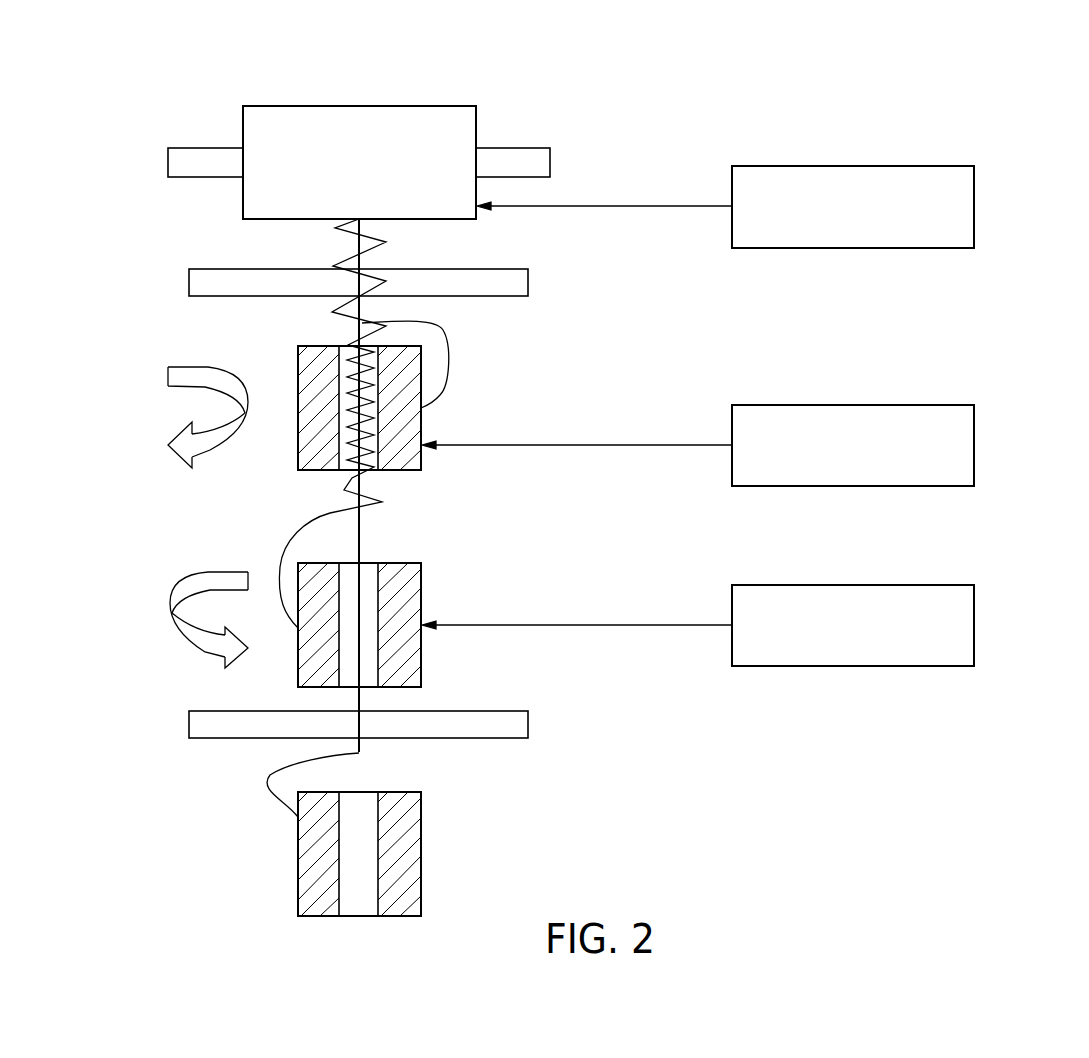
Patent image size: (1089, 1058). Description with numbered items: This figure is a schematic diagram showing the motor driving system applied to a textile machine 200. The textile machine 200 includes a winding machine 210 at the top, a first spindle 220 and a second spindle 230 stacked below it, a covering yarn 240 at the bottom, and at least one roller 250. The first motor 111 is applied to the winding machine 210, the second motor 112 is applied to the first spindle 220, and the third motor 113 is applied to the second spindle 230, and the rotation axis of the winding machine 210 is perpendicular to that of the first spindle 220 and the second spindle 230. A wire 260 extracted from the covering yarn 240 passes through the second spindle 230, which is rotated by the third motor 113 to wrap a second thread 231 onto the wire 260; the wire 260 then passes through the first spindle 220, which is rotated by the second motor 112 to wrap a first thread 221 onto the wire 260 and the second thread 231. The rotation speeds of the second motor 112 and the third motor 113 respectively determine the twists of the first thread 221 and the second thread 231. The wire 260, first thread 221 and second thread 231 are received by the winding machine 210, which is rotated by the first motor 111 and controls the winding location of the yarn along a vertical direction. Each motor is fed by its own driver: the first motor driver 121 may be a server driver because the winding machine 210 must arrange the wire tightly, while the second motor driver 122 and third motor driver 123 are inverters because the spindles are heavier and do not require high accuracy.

The textile machine 200 is at (136, 116).
The first motor 111 is at (359, 130).
The winding machine 210 is at (357, 106).
The first motor driver 121 is at (975, 208).
The second motor driver 122 is at (975, 446).
The third motor driver 123 is at (975, 626).
The second motor 112 is at (249, 366).
The first spindle 220 is at (298, 352).
The first thread 221 is at (445, 355).
The second thread 231 is at (275, 553).
The third motor 113 is at (236, 632).
The second spindle 230 is at (298, 672).
The roller 250 is at (190, 280).
The wire 260 is at (265, 778).
The covering yarn 240 is at (298, 855).